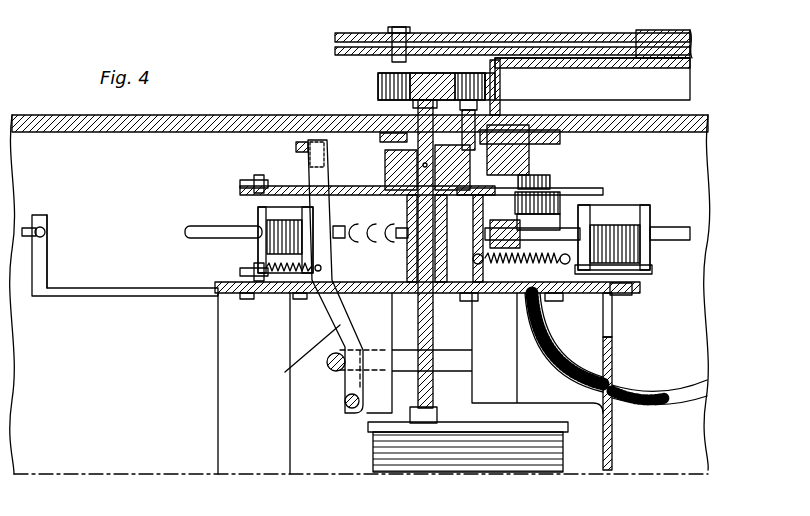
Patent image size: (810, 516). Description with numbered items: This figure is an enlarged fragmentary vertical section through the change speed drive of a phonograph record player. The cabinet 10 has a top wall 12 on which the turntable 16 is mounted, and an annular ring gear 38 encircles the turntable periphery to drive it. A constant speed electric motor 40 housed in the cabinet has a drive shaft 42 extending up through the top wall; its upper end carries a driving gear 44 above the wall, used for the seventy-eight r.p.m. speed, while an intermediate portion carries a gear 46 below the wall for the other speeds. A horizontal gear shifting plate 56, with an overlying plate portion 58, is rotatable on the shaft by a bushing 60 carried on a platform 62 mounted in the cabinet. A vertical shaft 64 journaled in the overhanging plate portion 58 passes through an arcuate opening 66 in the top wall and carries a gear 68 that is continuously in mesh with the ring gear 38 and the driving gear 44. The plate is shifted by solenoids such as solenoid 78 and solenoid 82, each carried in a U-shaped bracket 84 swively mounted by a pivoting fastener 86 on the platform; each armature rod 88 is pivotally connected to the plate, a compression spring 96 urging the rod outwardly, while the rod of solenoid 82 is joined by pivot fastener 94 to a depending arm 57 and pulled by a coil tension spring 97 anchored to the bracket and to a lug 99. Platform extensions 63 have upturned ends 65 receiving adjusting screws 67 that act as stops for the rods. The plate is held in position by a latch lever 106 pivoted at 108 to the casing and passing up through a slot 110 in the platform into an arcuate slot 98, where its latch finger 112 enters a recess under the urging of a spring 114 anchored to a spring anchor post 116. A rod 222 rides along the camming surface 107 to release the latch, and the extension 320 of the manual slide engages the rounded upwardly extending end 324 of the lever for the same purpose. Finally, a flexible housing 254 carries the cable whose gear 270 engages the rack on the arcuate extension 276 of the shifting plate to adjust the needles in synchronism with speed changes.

The cabinet 10 is at (90, 460).
The top wall 12 is at (62, 127).
The turntable 16 is at (575, 62).
The ring gear 38 is at (494, 90).
The electric motor 40 is at (420, 465).
The drive shaft 42 is at (432, 338).
The driving gear 44 is at (422, 92).
The gear 46 is at (400, 172).
The gear shifting plate 56 is at (368, 192).
The arm 57 is at (550, 188).
The overlying plate portion 58 is at (382, 137).
The bushing 60 is at (410, 215).
The platform 62 is at (505, 296).
The extensions 63 is at (130, 294).
The vertical shaft 64 is at (492, 135).
The upturned ends 65 is at (48, 269).
The arcuate opening 66 is at (510, 153).
The adjusting screws 67 is at (46, 236).
The gear 68 is at (453, 80).
The solenoid 78 is at (270, 216).
The solenoid 82 is at (624, 222).
The U-shaped bracket 84 is at (644, 263).
The pivoting fastener 86 is at (620, 297).
The rod 88 is at (548, 232).
The pivot fastener 94 is at (560, 268).
The compression spring 96 is at (376, 241).
The coil tension spring 97 is at (562, 294).
The arcuate slot 98 is at (330, 196).
The lug 99 is at (468, 294).
The latch lever 106 is at (334, 306).
The camming surface 107 is at (295, 362).
The pivot 108 is at (353, 409).
The slot 110 is at (347, 290).
The latch finger 112 is at (318, 163).
The spring 114 is at (288, 292).
The spring anchor post 116 is at (262, 272).
The rod 222 is at (336, 372).
The flexible housing 254 is at (657, 392).
The gear 270 is at (523, 195).
The arcuate extension 276 is at (600, 205).
The extension 320 is at (300, 145).
The upwardly extending end 324 is at (318, 140).